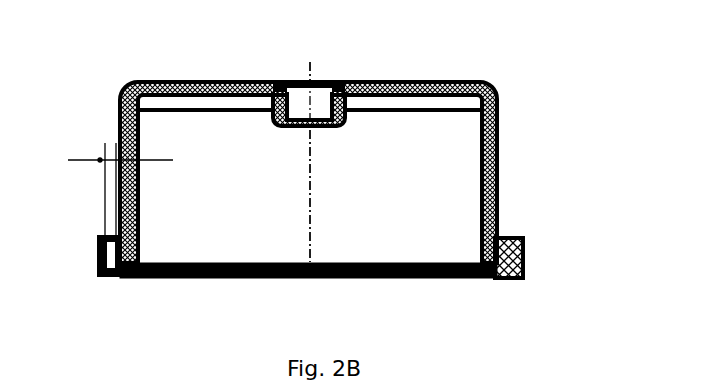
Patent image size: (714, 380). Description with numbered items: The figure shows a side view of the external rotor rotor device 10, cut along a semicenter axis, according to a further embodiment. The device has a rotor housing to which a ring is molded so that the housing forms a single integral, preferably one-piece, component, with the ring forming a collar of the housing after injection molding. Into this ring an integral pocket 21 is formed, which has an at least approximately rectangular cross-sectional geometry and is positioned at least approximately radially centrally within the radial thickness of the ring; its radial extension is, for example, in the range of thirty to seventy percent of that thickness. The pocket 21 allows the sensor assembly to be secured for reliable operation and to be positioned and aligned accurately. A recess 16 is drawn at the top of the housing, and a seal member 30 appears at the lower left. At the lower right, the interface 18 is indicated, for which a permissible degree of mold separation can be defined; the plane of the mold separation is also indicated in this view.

The external rotor rotor device 10 is at (524, 68).
The recess 16 is at (400, 82).
The interface 18 is at (501, 227).
The mounting foot 30 is at (97, 257).
The pocket 21 is at (93, 313).